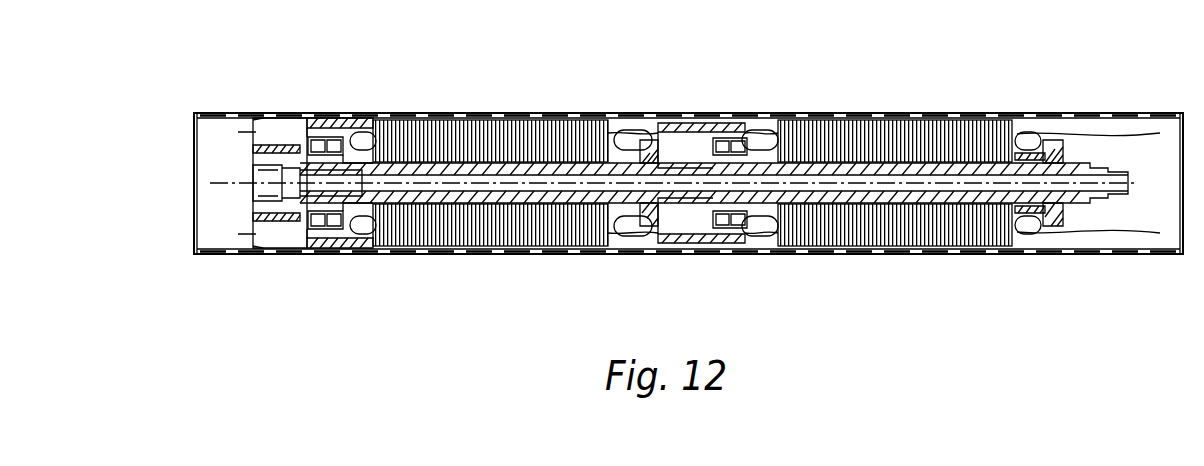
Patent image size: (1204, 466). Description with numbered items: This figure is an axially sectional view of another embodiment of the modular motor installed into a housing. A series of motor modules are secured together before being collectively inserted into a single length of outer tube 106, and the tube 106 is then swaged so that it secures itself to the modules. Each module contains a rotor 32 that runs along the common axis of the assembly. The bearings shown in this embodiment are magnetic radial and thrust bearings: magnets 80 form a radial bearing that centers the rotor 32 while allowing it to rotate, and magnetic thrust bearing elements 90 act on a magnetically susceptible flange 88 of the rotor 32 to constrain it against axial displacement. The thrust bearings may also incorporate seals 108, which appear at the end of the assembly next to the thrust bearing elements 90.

The outer tube 106 is at (933, 112).
The seals 108 is at (255, 145).
The magnetic thrust bearing elements 90 is at (298, 148).
The magnetically susceptible flange 88 is at (288, 146).
The magnets 80 is at (345, 146).
The rotor 32 is at (375, 160).